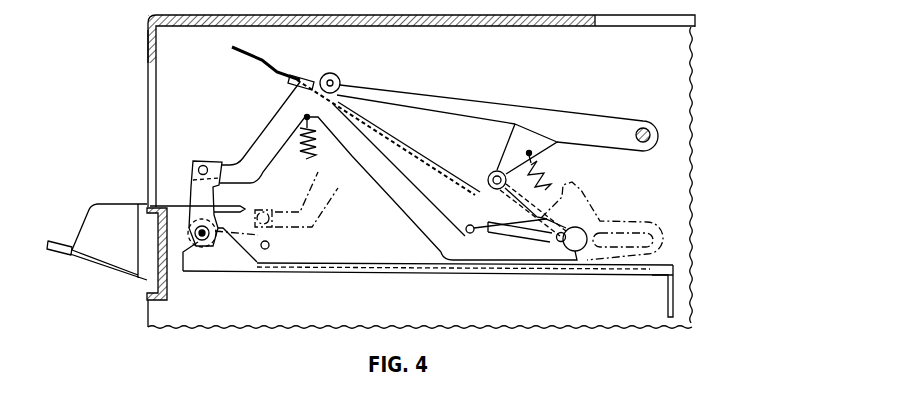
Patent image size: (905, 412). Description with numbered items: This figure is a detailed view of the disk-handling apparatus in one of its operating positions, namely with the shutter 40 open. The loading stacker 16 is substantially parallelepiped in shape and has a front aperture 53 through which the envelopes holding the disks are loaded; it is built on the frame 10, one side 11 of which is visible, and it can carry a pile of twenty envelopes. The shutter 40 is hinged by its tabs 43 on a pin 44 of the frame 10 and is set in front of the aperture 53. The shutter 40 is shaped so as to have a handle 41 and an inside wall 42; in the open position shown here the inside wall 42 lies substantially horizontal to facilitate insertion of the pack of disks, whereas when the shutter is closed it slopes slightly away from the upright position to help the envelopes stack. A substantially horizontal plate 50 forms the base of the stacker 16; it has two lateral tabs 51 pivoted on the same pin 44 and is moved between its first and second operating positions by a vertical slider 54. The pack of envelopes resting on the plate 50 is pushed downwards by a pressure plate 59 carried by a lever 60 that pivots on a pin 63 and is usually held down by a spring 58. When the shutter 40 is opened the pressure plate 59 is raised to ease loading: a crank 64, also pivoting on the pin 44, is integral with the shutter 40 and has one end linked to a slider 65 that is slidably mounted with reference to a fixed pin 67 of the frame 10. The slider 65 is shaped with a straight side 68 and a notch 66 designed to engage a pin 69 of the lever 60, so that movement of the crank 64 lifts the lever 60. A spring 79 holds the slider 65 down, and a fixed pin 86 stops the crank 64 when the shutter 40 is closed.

The frame 10 is at (555, 24).
The side of frame 11 is at (582, 321).
The loading stacker 16 is at (140, 123).
The shutter 40 is at (97, 207).
The handle 41 is at (63, 256).
The inside wall 42 is at (146, 208).
The tabs 43 is at (180, 212).
The pin 44 is at (201, 241).
The plate 50 is at (378, 265).
The lateral tabs 51 is at (237, 262).
The front aperture 53 is at (148, 65).
The vertical slider 54 is at (667, 290).
The spring 58 is at (546, 175).
The pressure plate 59 is at (411, 150).
The lever 60 is at (575, 122).
The pin 63 is at (642, 128).
The crank 64 is at (192, 183).
The slider 65 is at (270, 124).
The notch 66 is at (502, 172).
The fixed pin 67 is at (563, 232).
The straight side 68 is at (471, 234).
The pin 69 is at (489, 175).
The spring 79 is at (308, 159).
The fixed pin 86 is at (270, 245).